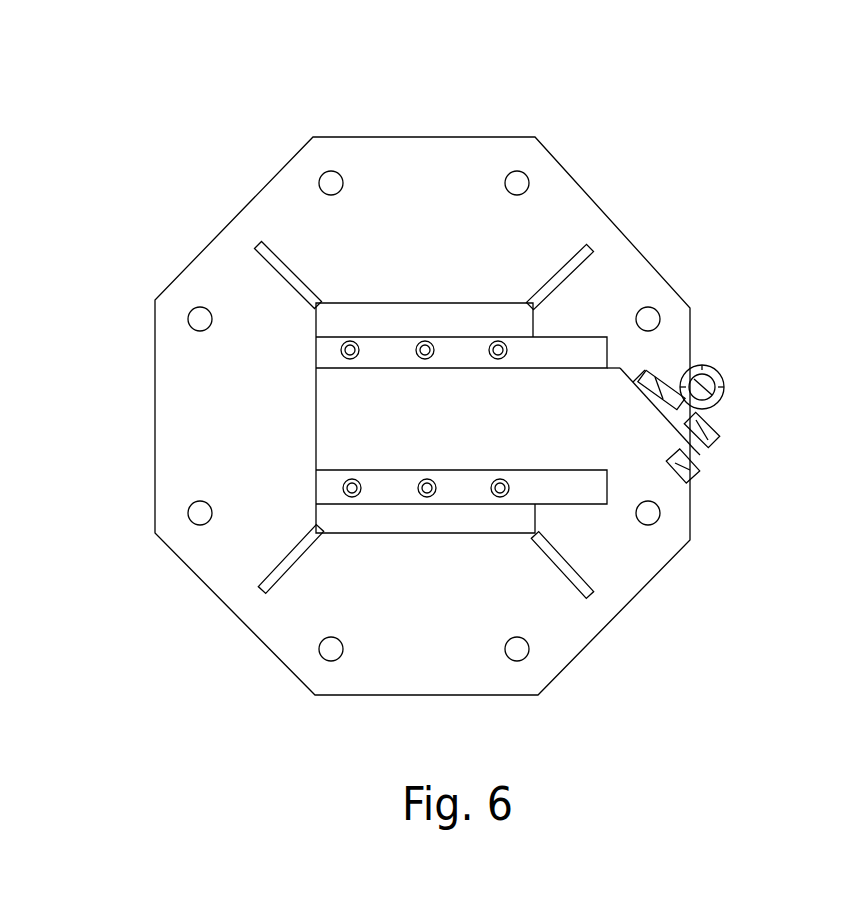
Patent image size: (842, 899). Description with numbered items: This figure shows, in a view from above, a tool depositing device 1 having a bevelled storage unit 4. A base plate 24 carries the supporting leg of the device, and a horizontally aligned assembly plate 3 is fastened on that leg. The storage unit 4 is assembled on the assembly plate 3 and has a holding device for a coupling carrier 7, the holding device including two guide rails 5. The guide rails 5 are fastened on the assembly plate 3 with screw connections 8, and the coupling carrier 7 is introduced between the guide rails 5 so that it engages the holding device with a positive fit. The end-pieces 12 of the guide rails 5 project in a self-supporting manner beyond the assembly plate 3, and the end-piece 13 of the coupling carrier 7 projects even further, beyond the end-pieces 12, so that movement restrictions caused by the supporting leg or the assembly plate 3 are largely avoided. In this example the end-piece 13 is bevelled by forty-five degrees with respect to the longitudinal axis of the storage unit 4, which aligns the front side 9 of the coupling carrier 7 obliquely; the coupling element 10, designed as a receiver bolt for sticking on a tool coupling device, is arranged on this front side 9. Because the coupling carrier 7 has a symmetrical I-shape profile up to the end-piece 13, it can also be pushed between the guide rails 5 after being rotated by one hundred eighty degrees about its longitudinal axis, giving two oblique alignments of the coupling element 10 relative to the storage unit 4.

The tool depositing device 1 is at (451, 374).
The assembly plate 3 is at (382, 368).
The storage unit 4 is at (561, 316).
The guide rails 5 is at (338, 350).
The coupling carrier 7 is at (333, 416).
The screw connections 8 is at (498, 340).
The front side 9 is at (633, 383).
The coupling element 10 is at (727, 387).
The end-pieces of the guide rails 12 is at (590, 497).
The end-piece of the coupling carrier 13 is at (650, 455).
The base plate 24 is at (273, 623).